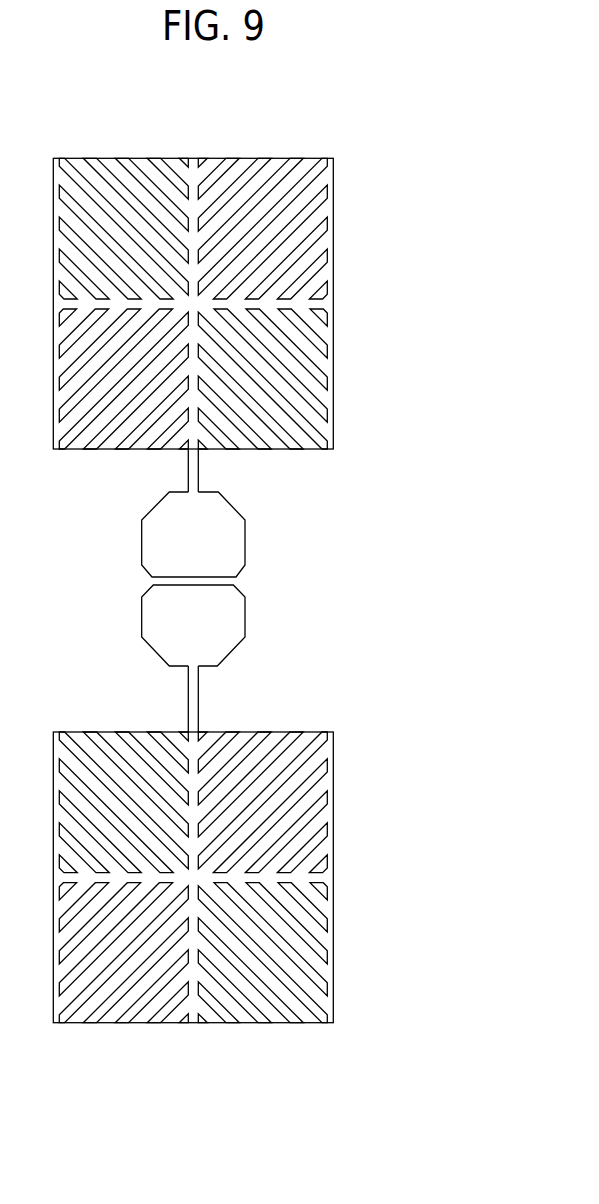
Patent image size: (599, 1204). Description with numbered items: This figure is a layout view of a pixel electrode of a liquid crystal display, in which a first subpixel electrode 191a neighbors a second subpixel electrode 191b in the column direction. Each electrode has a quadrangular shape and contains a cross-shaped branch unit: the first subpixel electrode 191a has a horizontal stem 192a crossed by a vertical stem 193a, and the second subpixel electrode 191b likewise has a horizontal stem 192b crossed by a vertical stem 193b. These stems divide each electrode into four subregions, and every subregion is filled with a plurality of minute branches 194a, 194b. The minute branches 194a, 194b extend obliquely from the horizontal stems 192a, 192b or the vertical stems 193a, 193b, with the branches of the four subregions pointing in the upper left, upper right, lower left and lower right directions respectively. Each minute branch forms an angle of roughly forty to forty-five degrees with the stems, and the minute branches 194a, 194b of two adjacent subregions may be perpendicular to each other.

The first subpixel electrode 191a is at (280, 303).
The horizontal stem 192a is at (315, 304).
The vertical stem 193a is at (193, 272).
The minute branches 194a is at (305, 231).
The second subpixel electrode 191b is at (281, 877).
The horizontal stem 192b is at (320, 878).
The vertical stem 193b is at (193, 976).
The minute branches 194b is at (298, 947).